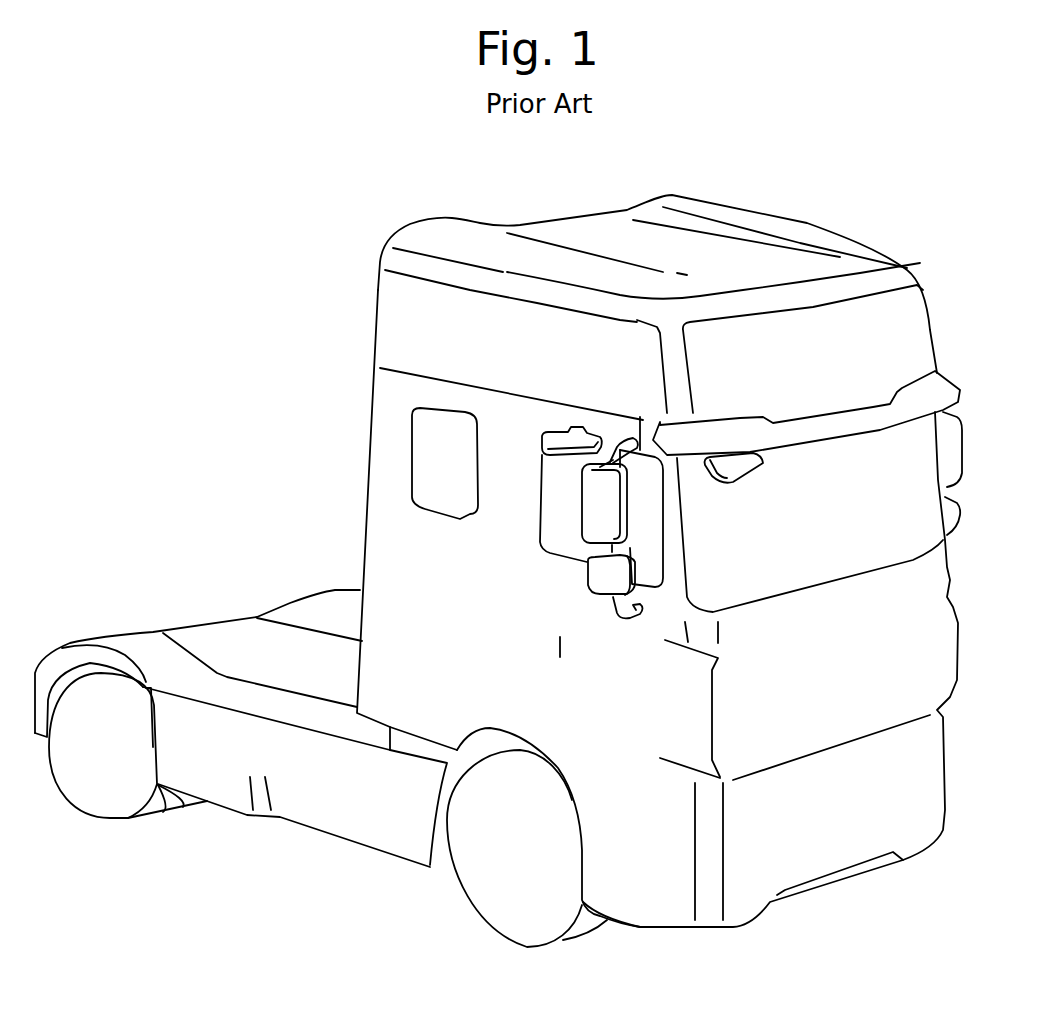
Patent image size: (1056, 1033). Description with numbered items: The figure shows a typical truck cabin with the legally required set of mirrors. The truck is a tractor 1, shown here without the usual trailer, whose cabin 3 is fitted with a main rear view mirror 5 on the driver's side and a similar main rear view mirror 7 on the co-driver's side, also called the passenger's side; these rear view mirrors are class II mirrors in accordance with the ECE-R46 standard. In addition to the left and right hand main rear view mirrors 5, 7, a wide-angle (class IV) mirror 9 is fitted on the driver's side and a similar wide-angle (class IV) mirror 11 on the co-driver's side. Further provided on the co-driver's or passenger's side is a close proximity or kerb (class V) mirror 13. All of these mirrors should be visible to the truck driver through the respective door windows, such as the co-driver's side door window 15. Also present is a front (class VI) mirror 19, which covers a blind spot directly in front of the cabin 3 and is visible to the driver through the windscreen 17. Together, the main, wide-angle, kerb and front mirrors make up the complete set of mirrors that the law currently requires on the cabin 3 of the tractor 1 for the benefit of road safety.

The tractor 1 is at (957, 242).
The cabin 3 is at (903, 766).
The main rear view mirror 5 is at (953, 438).
The main rear view mirror 7 is at (597, 498).
The wide-angle mirror 9 is at (953, 513).
The wide-angle mirror 11 is at (600, 582).
The kerb mirror 13 is at (562, 440).
The co-driver's side door window 15 is at (563, 538).
The windscreen 17 is at (850, 547).
The front mirror 19 is at (743, 457).